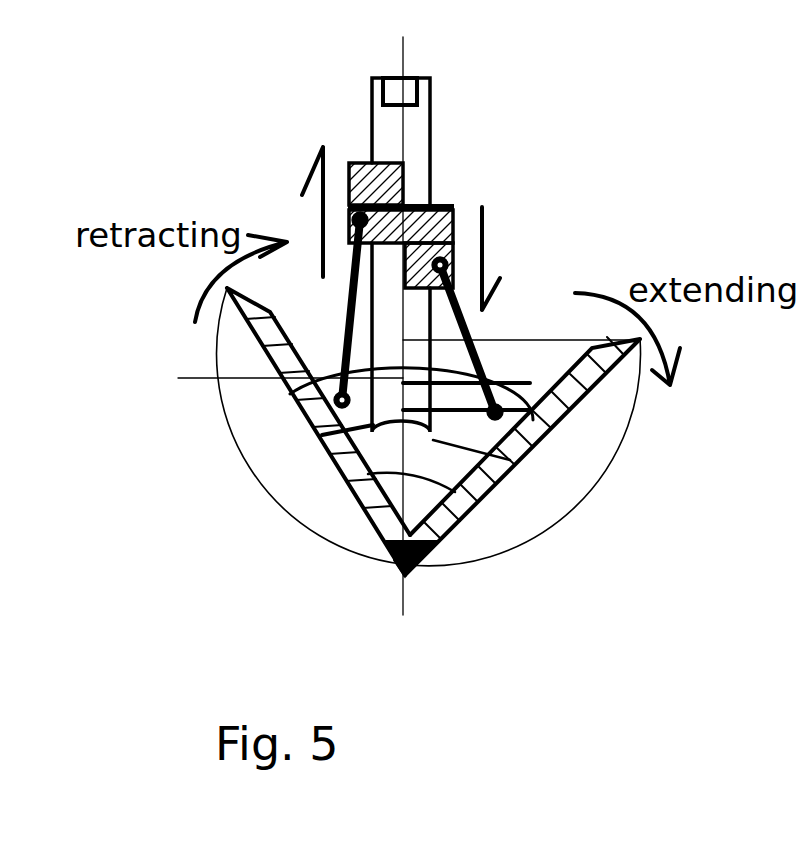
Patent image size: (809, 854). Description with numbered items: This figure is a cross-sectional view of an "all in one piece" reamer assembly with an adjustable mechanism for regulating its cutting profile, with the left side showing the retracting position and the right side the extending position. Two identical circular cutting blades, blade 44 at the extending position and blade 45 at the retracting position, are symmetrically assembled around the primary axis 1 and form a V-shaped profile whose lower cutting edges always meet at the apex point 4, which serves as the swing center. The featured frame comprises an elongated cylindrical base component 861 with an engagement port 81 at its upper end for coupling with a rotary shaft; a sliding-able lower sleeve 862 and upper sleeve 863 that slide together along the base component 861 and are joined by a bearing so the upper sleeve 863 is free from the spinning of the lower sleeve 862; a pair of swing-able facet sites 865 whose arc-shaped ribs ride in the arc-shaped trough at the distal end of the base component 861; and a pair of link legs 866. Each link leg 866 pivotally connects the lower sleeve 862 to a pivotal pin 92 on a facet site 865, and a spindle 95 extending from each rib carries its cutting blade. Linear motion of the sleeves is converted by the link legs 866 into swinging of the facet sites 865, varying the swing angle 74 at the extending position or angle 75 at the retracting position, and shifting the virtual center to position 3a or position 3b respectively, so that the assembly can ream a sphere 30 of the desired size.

The primary axis 1 is at (403, 65).
The engagement port 81 is at (380, 90).
The base component 861 is at (417, 158).
The upper sleeve 863 is at (455, 209).
The lower sleeve 862 is at (455, 272).
The virtual center at extending position 3a is at (400, 338).
The link leg 866 is at (477, 337).
The virtual center at retracting position 3b is at (372, 390).
The pivotal pin 92 is at (327, 408).
The spindle 95 is at (497, 432).
The circular cutting blade at retracting position 45 is at (270, 340).
The circular cutting blade at extending position 44 is at (597, 372).
The swinging angle at extending position 74 is at (428, 487).
The apex point 4 is at (405, 575).
The swinging angle at retracting position 75 is at (378, 477).
The swing-able facet site 865 is at (505, 465).
The sphere sought to be reamed 30 is at (607, 458).